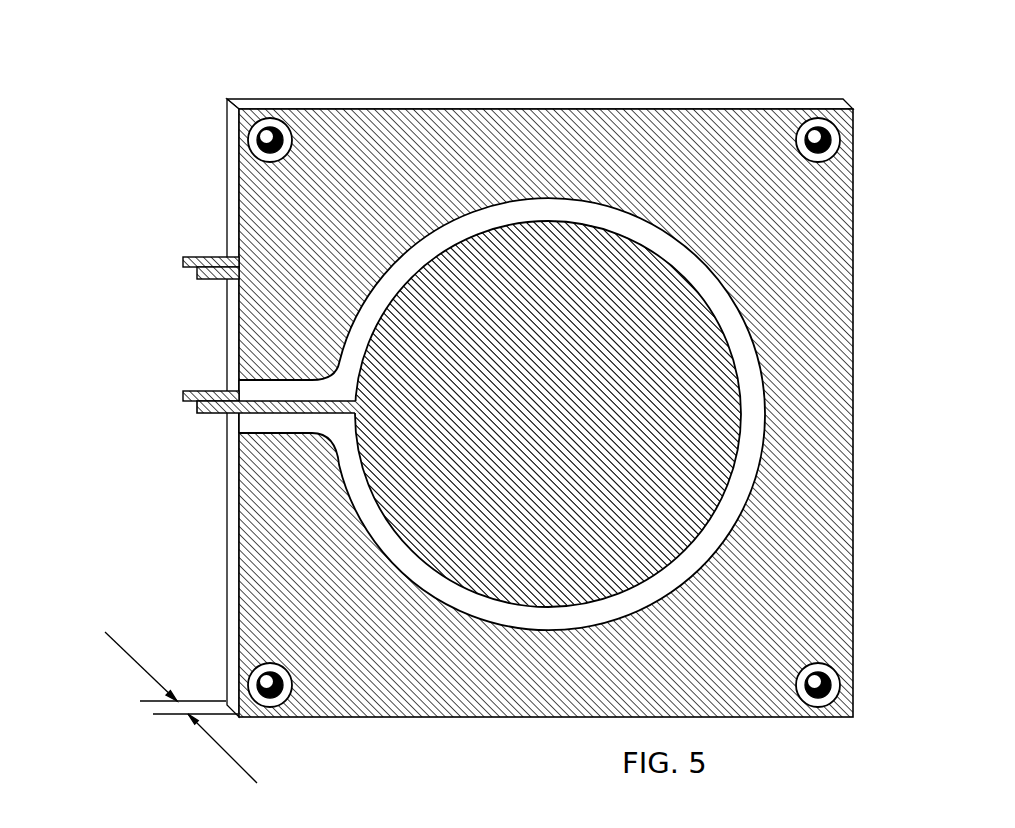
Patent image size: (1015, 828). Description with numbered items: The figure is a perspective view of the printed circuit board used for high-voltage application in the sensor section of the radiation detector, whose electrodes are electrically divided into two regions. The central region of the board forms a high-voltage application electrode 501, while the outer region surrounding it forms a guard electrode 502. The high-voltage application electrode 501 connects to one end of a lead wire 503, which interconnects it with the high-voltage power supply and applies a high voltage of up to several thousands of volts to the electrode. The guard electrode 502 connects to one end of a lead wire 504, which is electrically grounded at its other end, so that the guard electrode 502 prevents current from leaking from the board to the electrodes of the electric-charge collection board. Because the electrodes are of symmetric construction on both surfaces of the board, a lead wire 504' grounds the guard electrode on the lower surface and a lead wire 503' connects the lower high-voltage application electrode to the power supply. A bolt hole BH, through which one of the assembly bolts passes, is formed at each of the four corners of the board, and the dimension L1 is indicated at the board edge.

The high-voltage application electrode 501 is at (643, 450).
The guard electrode 502 is at (763, 557).
The lead wire 503 is at (394, 413).
The lead wire 503' is at (148, 369).
The lead wire 504 is at (143, 265).
The lead wire 504' is at (148, 234).
The bolt hole BH is at (264, 138).
The plate thickness dimension L1 is at (170, 707).